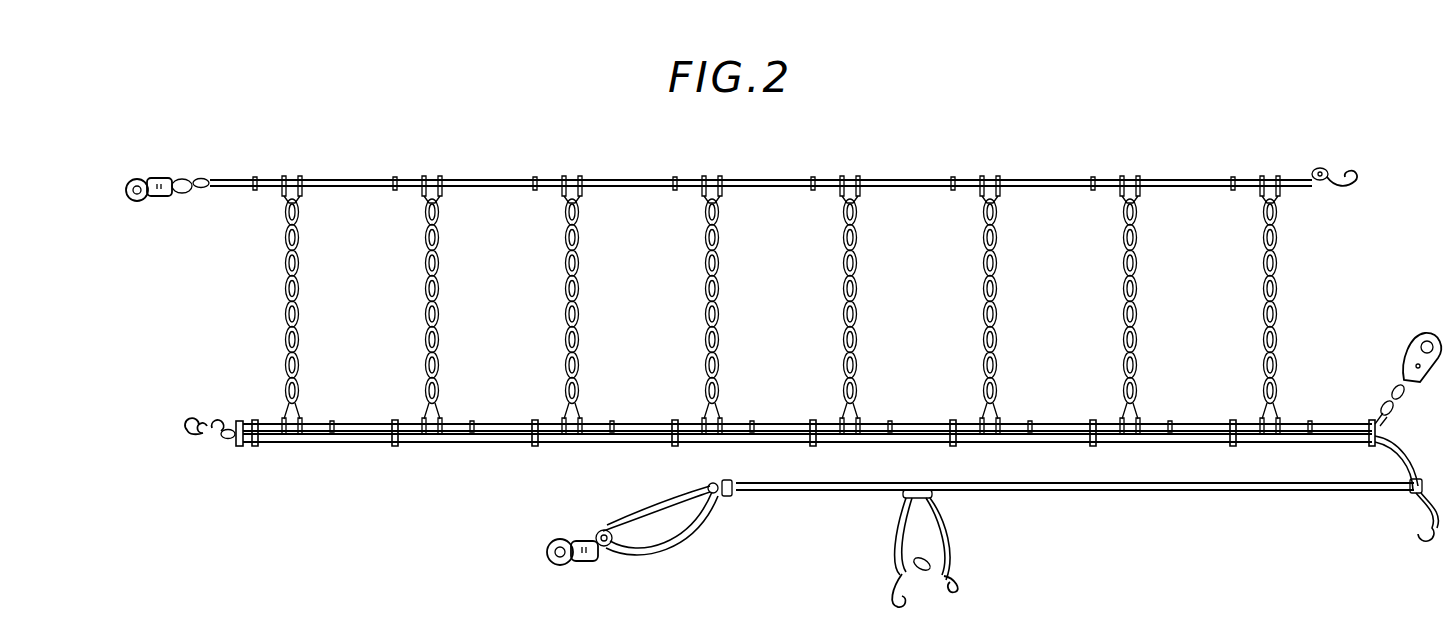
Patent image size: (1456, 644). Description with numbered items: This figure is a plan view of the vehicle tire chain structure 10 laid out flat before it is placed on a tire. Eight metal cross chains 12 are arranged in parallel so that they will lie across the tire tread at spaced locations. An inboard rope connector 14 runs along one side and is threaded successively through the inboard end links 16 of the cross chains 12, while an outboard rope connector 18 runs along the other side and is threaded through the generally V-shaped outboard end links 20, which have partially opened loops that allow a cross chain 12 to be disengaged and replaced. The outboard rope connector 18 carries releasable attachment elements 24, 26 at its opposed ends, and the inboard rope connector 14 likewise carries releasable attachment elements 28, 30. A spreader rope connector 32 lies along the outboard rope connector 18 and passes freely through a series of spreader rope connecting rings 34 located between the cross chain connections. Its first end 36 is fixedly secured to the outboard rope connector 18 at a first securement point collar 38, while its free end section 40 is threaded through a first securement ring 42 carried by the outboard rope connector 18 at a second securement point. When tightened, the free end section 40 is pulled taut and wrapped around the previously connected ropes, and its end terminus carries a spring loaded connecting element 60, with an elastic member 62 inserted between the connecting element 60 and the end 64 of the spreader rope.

The vehicle tire chain structure 10 is at (1014, 150).
The metal cross chain 12 is at (584, 318).
The inboard rope connector 14 is at (497, 180).
The inboard end link 16 is at (582, 198).
The outboard rope connector 18 is at (770, 424).
The outboard end link 20 is at (307, 413).
The releasable outboard attachment element 24 is at (190, 437).
The releasable outboard attachment element 26 is at (1415, 334).
The releasable attachment element 28 is at (1354, 166).
The releasable attachment element 30 is at (152, 176).
The spreader rope connector 32 is at (586, 448).
The spreader rope connecting ring 34 is at (399, 446).
The first end of the spreader rope connector 36 is at (234, 442).
The first securement point collar 38 is at (240, 420).
The free end section of the spreader rope connector 40 is at (1186, 483).
The first securement ring 42 is at (1371, 420).
The spring loaded connecting element 60 is at (588, 570).
The elastic member 62 is at (650, 545).
The end of the spreader rope 64 is at (729, 500).